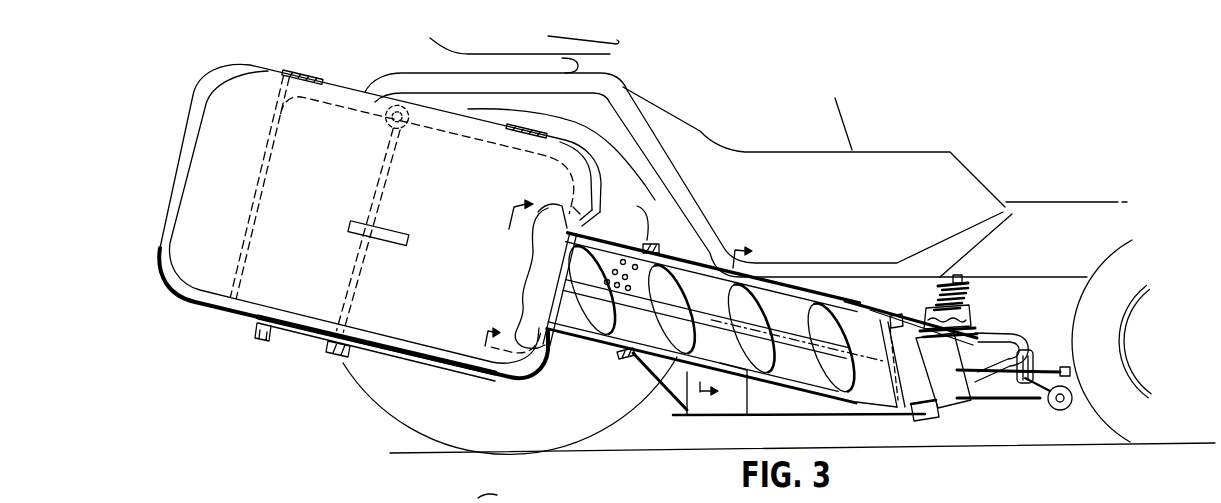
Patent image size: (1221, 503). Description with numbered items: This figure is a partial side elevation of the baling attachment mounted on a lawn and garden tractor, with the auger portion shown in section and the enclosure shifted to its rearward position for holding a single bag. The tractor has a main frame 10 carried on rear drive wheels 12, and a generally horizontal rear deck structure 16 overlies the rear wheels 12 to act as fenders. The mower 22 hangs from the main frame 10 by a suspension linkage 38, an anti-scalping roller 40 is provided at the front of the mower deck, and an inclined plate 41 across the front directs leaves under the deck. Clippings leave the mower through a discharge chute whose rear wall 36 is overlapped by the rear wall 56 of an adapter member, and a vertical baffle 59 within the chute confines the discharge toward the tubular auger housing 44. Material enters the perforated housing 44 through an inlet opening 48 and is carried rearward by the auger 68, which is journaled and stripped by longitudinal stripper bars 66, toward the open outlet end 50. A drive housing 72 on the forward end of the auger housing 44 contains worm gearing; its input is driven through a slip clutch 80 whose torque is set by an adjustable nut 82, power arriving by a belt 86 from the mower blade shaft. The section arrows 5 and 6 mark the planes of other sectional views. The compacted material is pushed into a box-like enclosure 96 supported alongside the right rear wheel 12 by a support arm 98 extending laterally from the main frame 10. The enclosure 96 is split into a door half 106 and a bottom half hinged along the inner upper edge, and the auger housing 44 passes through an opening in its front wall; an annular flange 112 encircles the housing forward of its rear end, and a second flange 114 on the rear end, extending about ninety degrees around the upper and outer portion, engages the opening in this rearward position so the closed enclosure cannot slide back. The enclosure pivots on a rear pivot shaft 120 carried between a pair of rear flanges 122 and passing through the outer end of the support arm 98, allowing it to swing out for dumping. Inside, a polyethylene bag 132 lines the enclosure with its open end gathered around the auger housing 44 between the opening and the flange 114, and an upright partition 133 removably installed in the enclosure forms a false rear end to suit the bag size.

The section line 5- 5 is at (731, 318).
The section line 6- 6 is at (509, 273).
The main frame 10 is at (1066, 207).
The rear drive wheels 12 is at (372, 395).
The rear deck structure 16 is at (756, 157).
The mower 22 is at (1019, 328).
The rear wall 36 is at (712, 416).
The suspension linkage 38 is at (1036, 363).
The anti-scalping roller 40 is at (1058, 411).
The plate 41 is at (999, 388).
The auger housing 44 is at (618, 243).
The inlet opening 48 is at (874, 318).
The outlet end 50 is at (568, 256).
The rear wall 56 is at (666, 383).
The vertical baffle 59 is at (762, 406).
The stripper bars 66 is at (614, 354).
The auger 68 is at (610, 332).
The drive housing 72 is at (941, 406).
The slip clutch 80 is at (968, 316).
The adjustable nut 82 is at (502, 496).
The belt 86 is at (895, 317).
The enclosure 96 is at (222, 114).
The support arm 98 is at (338, 356).
The door half 106 is at (295, 167).
The annular flange 112 is at (630, 213).
The second flange 114 is at (573, 207).
The rear pivot shaft 120 is at (280, 313).
The rear flanges 122 is at (268, 336).
The bag 132 is at (545, 375).
The upright partition 133 is at (253, 188).